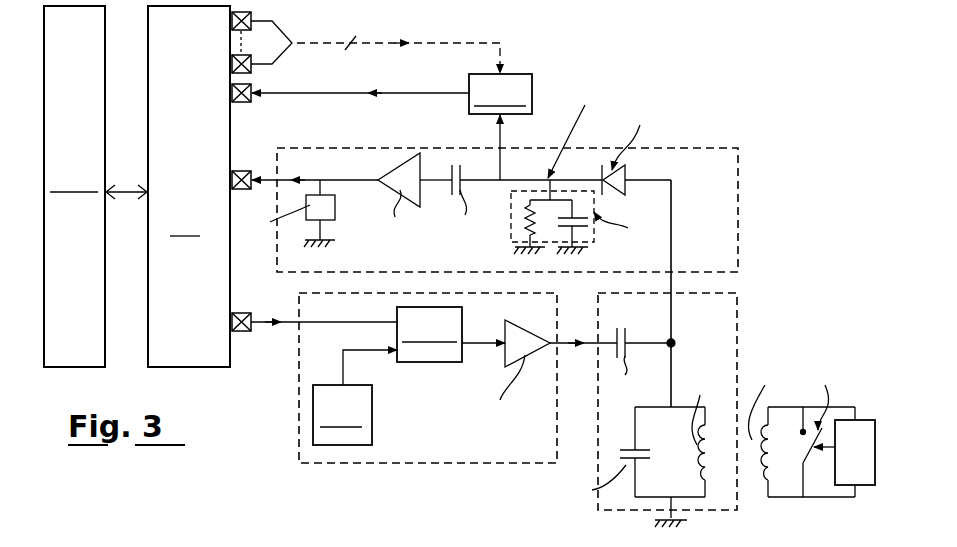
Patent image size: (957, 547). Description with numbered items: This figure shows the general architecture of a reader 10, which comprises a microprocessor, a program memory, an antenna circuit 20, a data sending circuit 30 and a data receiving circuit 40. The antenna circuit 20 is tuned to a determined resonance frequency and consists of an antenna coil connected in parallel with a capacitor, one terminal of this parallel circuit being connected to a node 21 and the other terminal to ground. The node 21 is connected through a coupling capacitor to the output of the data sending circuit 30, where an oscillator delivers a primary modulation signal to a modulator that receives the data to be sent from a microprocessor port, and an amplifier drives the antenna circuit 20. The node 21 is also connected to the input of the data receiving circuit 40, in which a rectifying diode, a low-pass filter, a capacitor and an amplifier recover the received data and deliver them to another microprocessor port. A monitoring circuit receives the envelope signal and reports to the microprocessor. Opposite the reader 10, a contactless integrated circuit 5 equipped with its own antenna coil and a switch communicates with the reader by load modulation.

The reader 10 is at (638, 73).
The data receiving circuit 40 is at (718, 148).
The data sending circuit 30 is at (298, 397).
The antenna circuit 20 is at (745, 345).
The node 21 is at (678, 342).
The contactless integrated circuit 5 is at (860, 464).